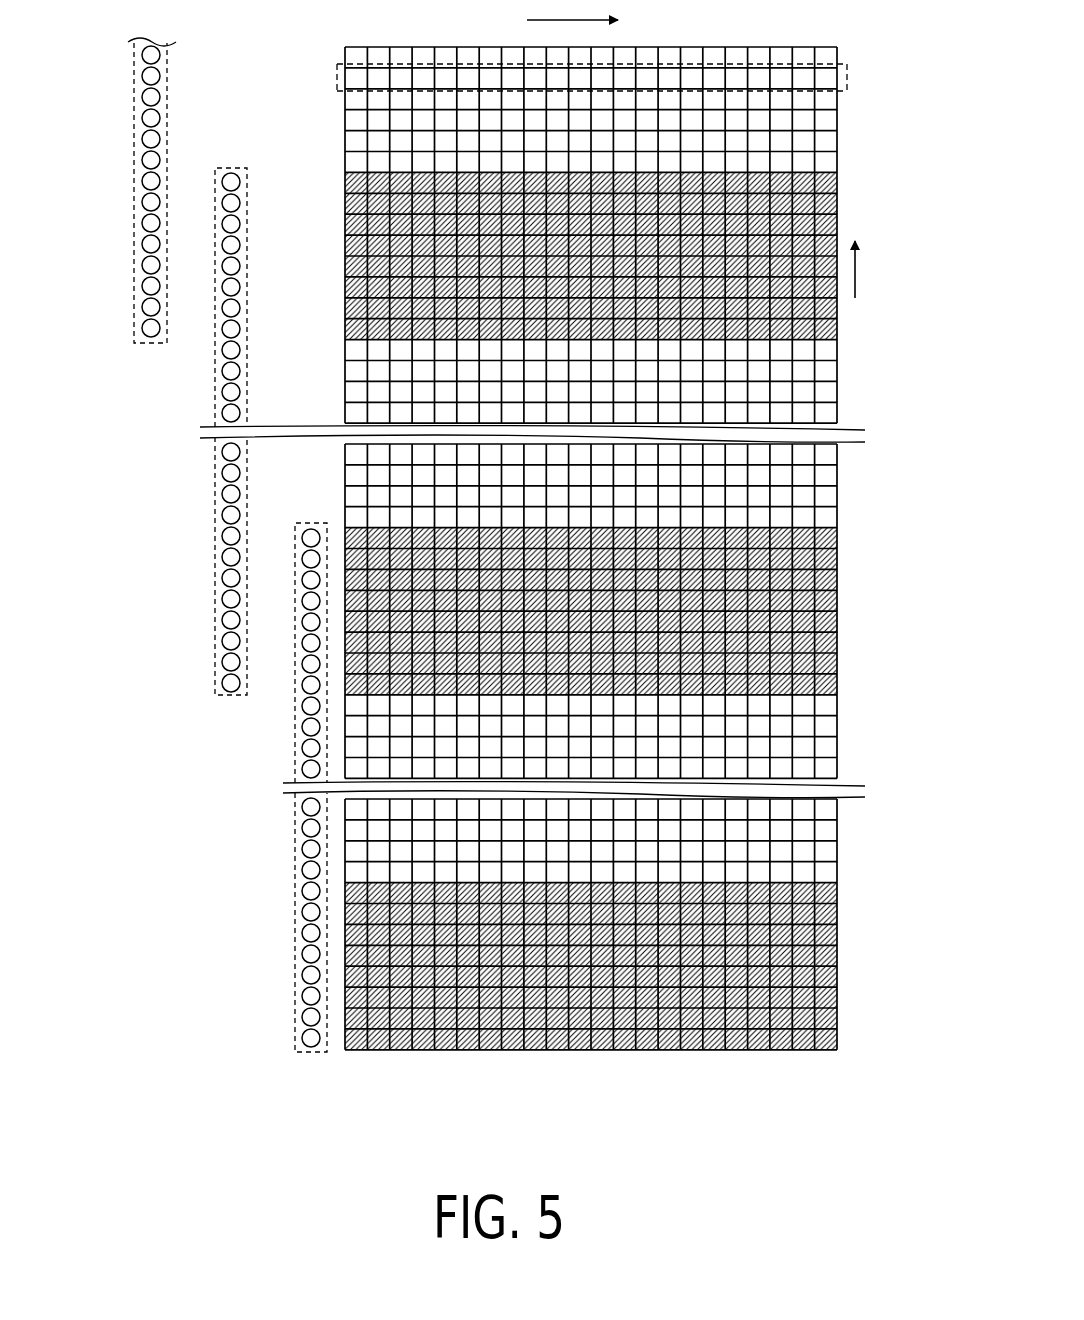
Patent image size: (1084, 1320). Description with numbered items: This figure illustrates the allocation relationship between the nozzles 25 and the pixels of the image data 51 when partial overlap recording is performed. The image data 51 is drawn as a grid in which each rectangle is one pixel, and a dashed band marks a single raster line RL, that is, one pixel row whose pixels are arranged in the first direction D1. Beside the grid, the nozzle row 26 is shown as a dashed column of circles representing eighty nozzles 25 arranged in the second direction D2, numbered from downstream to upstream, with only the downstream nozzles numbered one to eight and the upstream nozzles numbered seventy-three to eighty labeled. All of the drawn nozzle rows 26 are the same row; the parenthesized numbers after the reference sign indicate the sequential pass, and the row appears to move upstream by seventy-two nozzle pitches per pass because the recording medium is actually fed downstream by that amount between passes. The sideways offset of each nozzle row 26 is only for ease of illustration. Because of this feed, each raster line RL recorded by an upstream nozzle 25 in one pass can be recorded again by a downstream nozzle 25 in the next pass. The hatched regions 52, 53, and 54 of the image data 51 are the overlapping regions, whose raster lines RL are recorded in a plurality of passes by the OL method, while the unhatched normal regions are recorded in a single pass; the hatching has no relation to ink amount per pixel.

The nozzle 25 is at (158, 78).
The nozzle row 26 is at (280, 1105).
The image data 51 is at (757, 47).
The overlapping region 52 is at (338, 173).
The overlapping region 53 is at (840, 529).
The overlapping region 54 is at (840, 884).
The raster line RL is at (336, 68).
The first direction D1 is at (572, 10).
The second direction D2 is at (870, 269).